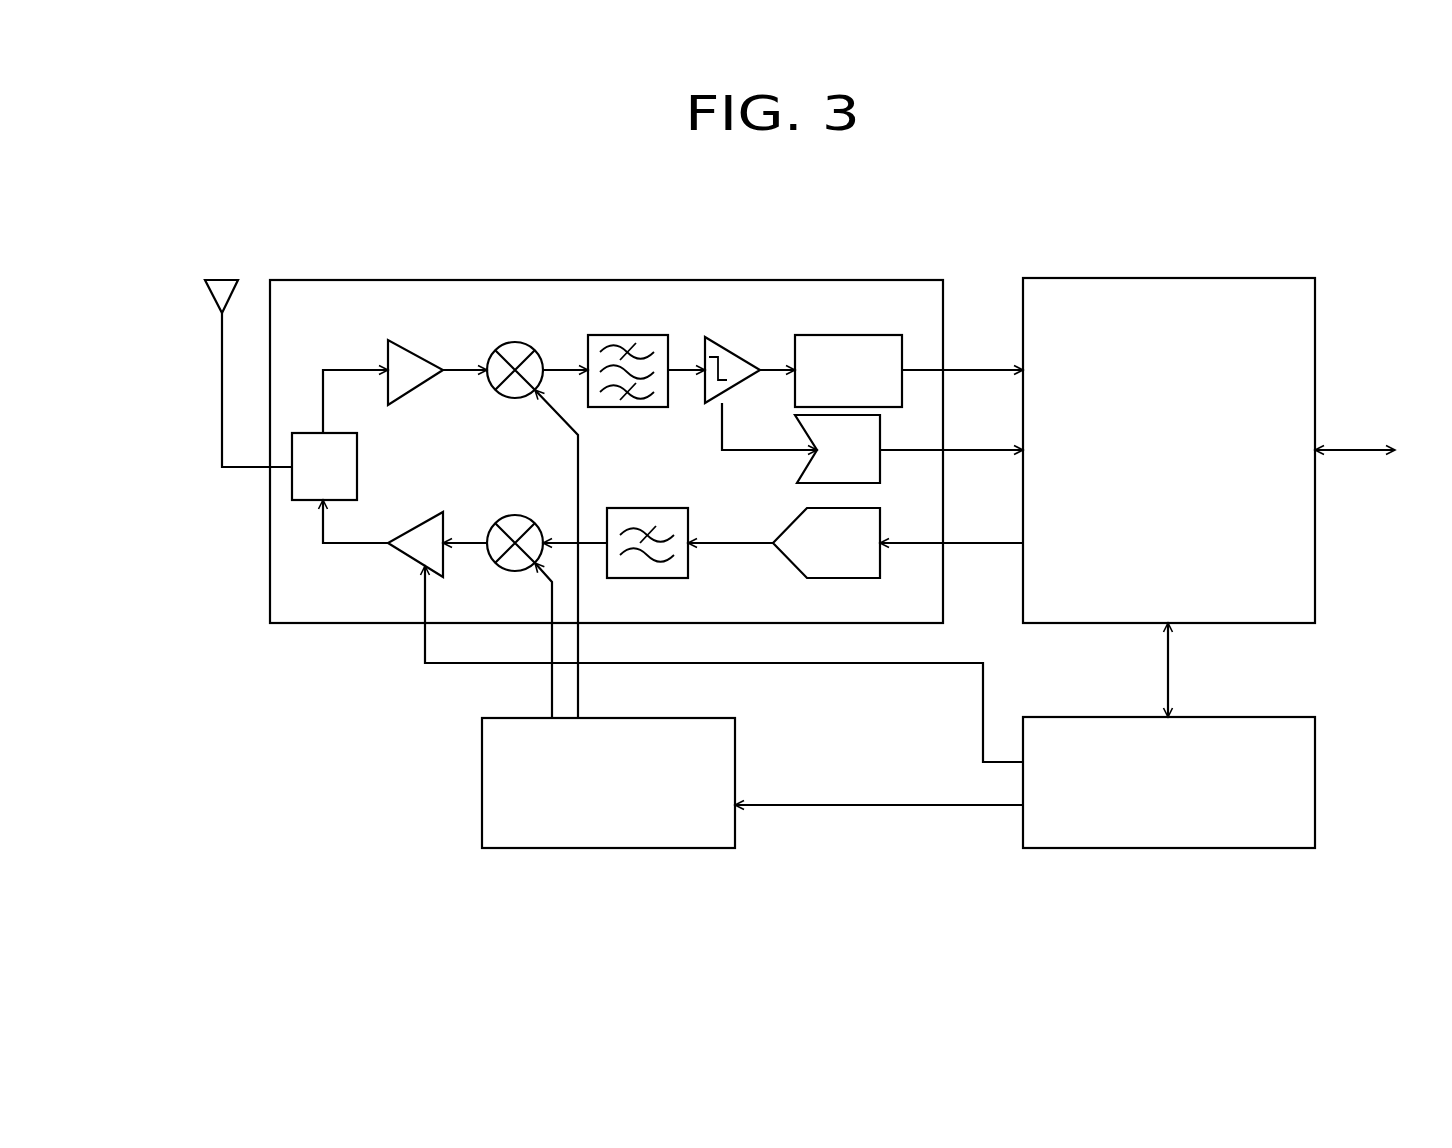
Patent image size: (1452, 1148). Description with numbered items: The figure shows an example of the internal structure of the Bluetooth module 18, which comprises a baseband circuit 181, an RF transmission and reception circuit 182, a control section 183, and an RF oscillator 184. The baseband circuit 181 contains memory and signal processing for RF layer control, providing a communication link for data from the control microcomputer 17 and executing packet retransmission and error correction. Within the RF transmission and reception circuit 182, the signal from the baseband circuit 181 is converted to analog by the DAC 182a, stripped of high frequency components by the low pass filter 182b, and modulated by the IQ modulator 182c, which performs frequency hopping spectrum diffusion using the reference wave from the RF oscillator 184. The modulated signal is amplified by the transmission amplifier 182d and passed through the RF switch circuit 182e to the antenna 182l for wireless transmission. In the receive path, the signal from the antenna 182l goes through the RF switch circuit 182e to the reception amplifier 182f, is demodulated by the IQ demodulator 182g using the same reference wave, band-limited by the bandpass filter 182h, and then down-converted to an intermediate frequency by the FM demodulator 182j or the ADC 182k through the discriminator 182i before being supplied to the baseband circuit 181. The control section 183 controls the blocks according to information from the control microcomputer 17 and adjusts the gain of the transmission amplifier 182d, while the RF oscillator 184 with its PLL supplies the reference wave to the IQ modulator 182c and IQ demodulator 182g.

The Bluetooth module 18 is at (510, 228).
The control microcomputer 17 is at (1372, 448).
The baseband circuit 181 is at (1165, 278).
The RF transmission and reception circuit 182 is at (358, 280).
The Digital-Analog-Converter (DAC) 182a is at (825, 578).
The low pass filter 182b is at (637, 578).
The IQ modulator 182c is at (504, 574).
The transmission amplifier 182d is at (410, 565).
The RF switch circuit 182e is at (357, 467).
The reception amplifier 182f is at (416, 387).
The IQ demodulator 182g is at (515, 398).
The bandpass filter 182h is at (640, 407).
The discriminator 182i is at (770, 330).
The FM demodulator 182j is at (849, 335).
The Analog-Digital-Converter (ADC) 182k is at (801, 470).
The antenna 182l is at (222, 349).
The control section 183 is at (1170, 848).
The RF oscillator 184 is at (607, 848).